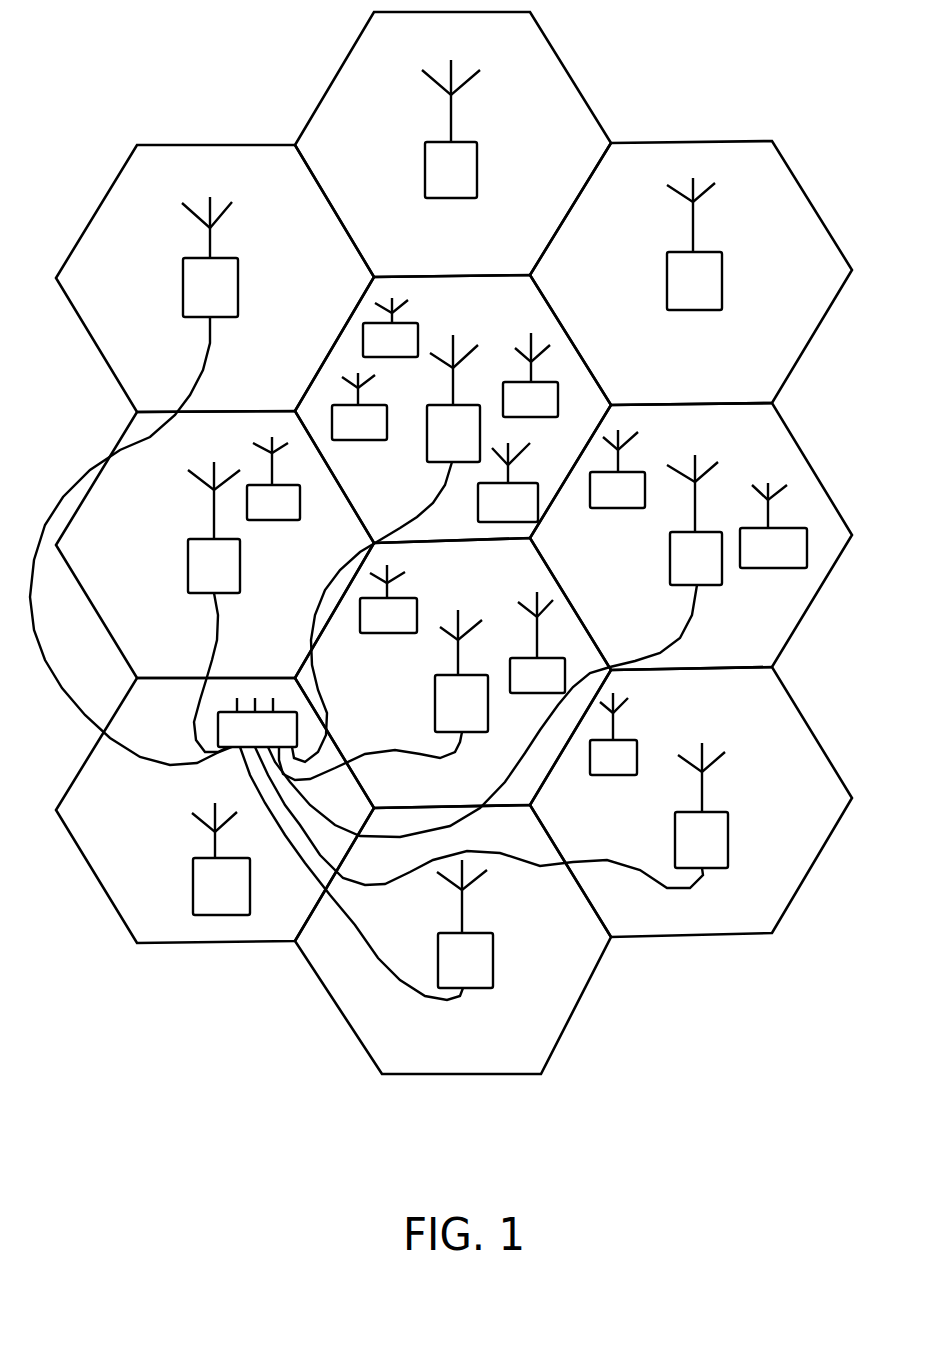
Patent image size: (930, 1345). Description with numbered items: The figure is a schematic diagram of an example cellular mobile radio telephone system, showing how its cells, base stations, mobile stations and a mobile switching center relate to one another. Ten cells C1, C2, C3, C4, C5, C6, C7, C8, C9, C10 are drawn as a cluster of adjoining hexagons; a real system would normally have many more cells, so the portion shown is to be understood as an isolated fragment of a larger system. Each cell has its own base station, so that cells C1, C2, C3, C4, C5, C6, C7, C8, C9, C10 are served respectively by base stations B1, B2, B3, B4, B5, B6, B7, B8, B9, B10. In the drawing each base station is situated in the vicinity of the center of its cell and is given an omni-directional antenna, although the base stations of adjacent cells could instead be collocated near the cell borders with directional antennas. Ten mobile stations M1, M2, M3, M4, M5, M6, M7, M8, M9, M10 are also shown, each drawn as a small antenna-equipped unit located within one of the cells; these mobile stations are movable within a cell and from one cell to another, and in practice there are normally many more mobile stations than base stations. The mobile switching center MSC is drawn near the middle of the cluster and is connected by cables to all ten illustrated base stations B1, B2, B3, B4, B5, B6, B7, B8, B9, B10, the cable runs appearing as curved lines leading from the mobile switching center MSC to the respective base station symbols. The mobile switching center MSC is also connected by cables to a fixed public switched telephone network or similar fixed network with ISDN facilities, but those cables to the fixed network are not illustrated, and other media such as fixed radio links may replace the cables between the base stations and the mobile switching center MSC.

The cell C1 is at (401, 520).
The cell C2 is at (653, 387).
The cell C3 is at (655, 647).
The cell C4 is at (415, 797).
The cell C5 is at (173, 658).
The cell C6 is at (172, 388).
The cell C7 is at (410, 257).
The cell C8 is at (650, 910).
The cell C9 is at (413, 1042).
The cell C10 is at (170, 903).
The base station B1 is at (453, 398).
The base station B2 is at (694, 244).
The base station B3 is at (694, 520).
The base station B4 is at (461, 671).
The base station B5 is at (214, 527).
The base station B6 is at (210, 257).
The base station B7 is at (451, 129).
The base station B8 is at (701, 805).
The base station B9 is at (465, 924).
The base station B10 is at (221, 859).
The mobile station M1 is at (613, 734).
The mobile station M2 is at (273, 479).
The mobile station M3 is at (359, 407).
The mobile station M4 is at (530, 375).
The mobile station M5 is at (617, 469).
The mobile station M6 is at (390, 328).
The mobile station M7 is at (508, 482).
The mobile station M8 is at (537, 643).
The mobile station M9 is at (388, 599).
The mobile station M10 is at (773, 525).
The mobile switching center MSC is at (366, 658).